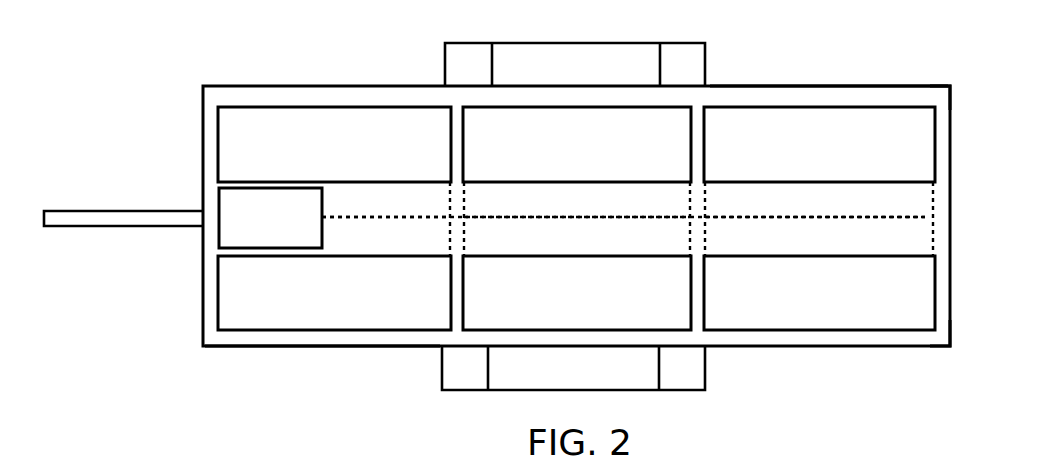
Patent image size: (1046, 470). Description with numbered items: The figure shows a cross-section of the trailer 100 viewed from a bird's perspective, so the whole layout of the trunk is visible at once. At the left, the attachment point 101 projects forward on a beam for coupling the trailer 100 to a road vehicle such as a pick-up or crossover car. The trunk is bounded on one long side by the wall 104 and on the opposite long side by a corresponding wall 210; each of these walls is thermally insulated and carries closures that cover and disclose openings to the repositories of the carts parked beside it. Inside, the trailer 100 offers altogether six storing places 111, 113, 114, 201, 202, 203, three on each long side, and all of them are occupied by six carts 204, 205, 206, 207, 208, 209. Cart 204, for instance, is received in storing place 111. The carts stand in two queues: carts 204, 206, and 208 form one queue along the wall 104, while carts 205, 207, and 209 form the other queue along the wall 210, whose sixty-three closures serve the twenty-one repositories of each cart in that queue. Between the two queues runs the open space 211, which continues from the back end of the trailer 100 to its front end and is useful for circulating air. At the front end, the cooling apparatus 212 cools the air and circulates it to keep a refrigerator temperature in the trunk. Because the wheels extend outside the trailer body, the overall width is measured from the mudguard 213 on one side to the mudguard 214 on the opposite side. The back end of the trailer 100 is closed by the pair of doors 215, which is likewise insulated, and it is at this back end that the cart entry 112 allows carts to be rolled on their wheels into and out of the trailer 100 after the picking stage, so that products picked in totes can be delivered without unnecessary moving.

The trailer 100 is at (262, 86).
The attachment point 101 is at (62, 227).
The wall 104 is at (290, 346).
The storing place 111 is at (429, 233).
The cart entry 112 is at (940, 86).
The storing place 113 is at (632, 233).
The storing place 114 is at (860, 233).
The storing place 201 is at (429, 197).
The storing place 202 is at (632, 197).
The storing place 203 is at (860, 197).
The cart 204 is at (424, 291).
The cart 205 is at (429, 137).
The cart 206 is at (632, 291).
The cart 207 is at (632, 137).
The cart 208 is at (857, 291).
The cart 209 is at (862, 137).
The wall 210 is at (815, 86).
The open space 211 is at (897, 216).
The cooling apparatus 212 is at (311, 215).
The mudguard 213 is at (445, 57).
The mudguard 214 is at (442, 384).
The pair of doors 215 is at (948, 346).